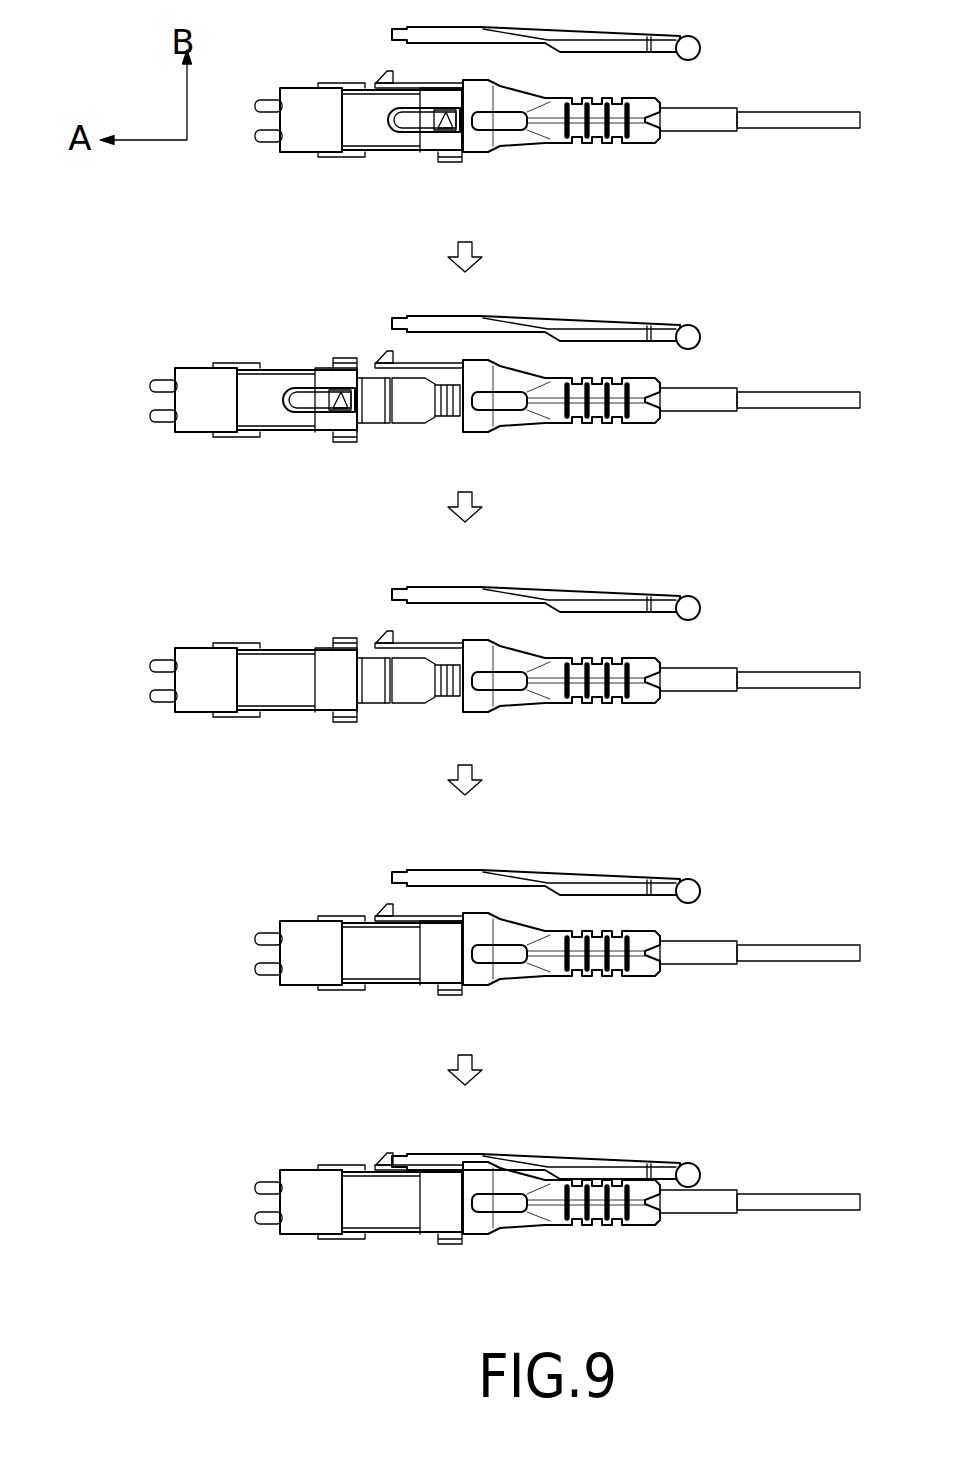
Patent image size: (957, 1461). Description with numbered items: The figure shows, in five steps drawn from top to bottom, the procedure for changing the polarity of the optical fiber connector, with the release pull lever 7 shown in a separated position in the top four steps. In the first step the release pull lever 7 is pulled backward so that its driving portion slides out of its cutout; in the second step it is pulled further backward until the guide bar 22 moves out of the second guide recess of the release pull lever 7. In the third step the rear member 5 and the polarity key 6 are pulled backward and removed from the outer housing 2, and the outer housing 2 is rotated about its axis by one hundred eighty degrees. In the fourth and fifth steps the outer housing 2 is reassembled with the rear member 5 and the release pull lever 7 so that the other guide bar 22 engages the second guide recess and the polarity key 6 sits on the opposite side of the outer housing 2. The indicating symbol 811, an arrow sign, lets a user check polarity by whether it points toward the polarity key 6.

The outer housing 2 is at (372, 162).
The guide bar 22 is at (447, 162).
The indicating symbol 811 is at (450, 130).
The polarity key 6 is at (368, 66).
The rear member 5 is at (590, 152).
The release pull lever 7 is at (722, 52).